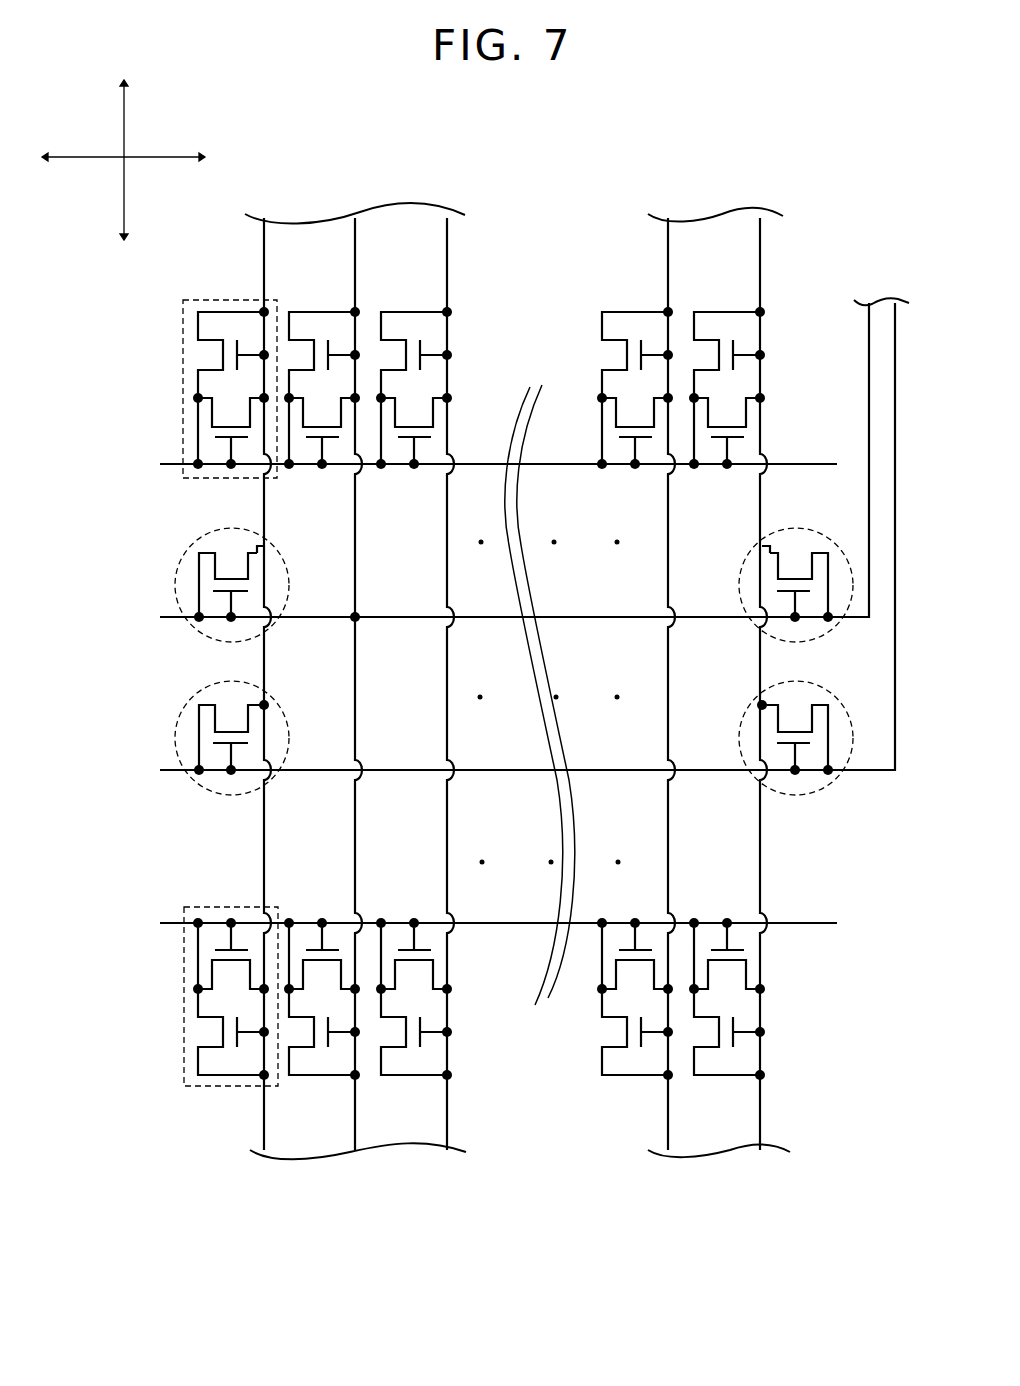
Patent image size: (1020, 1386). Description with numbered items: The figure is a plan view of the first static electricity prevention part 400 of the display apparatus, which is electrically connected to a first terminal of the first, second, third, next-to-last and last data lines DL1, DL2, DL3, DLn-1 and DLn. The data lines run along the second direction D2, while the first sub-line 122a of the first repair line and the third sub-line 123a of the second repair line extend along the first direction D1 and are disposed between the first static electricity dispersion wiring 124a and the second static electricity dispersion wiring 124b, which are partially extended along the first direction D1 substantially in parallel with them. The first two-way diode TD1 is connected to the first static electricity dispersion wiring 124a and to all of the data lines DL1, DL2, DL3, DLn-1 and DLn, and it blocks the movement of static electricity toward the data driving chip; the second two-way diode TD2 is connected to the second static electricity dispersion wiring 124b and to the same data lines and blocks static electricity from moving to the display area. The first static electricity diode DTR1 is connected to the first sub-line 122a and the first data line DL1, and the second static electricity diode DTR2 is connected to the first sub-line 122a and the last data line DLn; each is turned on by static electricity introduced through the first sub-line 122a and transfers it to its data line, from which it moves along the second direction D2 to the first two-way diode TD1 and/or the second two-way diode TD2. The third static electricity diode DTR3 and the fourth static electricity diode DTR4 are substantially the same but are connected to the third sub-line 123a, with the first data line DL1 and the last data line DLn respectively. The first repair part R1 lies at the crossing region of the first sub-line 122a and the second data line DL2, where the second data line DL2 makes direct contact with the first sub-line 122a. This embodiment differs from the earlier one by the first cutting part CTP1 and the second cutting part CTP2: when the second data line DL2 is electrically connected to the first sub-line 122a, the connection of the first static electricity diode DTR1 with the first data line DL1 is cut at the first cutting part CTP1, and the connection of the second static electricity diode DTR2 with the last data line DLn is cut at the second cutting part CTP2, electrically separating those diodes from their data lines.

The first static electricity prevention part 400 is at (517, 129).
The first direction D1 is at (145, 159).
The second direction D2 is at (128, 176).
The first two-way diode TD1 is at (183, 362).
The second two-way diode TD2 is at (184, 1012).
The first static electricity dispersion wiring 124a is at (160, 464).
The first sub-line 122a is at (160, 617).
The third sub-line 123a is at (160, 770).
The second static electricity dispersion wiring 124b is at (160, 923).
The first cutting part CTP1 is at (262, 542).
The second cutting part CTP2 is at (763, 542).
The first static electricity diode DTR1 is at (207, 643).
The second static electricity diode DTR2 is at (820, 641).
The third static electricity diode DTR3 is at (213, 797).
The fourth static electricity diode DTR4 is at (819, 797).
The first repair part R1 is at (210, 641).
The first data line DL1 is at (264, 1158).
The second data line DL2 is at (355, 1152).
The third data line DL3 is at (447, 1145).
The (n−1)-th data line DLn-1 is at (668, 1158).
The n-th data line DLn is at (760, 1146).